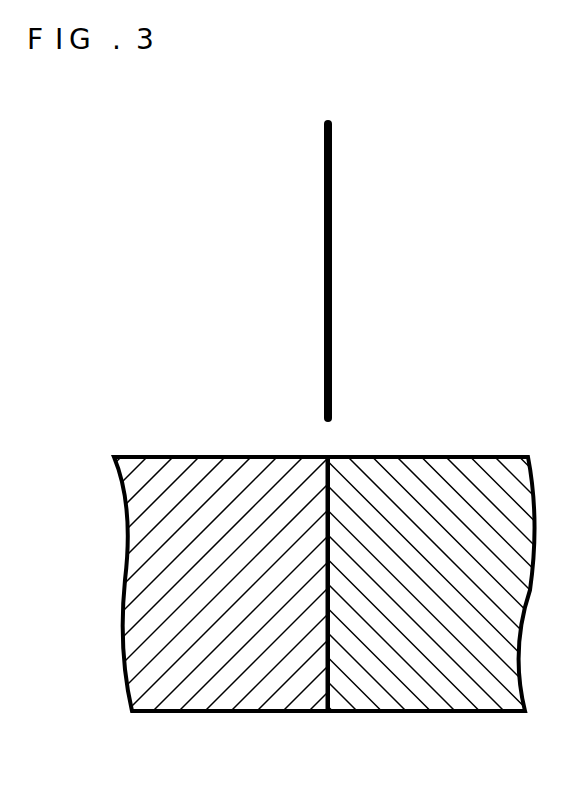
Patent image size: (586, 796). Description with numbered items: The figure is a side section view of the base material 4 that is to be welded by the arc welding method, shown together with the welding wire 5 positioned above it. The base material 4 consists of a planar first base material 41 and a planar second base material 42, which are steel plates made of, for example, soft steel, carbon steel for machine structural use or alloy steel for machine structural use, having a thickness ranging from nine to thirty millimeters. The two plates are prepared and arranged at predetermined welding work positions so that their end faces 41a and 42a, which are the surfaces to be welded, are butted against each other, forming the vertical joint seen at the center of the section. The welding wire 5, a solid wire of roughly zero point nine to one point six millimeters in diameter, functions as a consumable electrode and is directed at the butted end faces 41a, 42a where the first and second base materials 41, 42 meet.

The base material 4 is at (293, 580).
The welding wire 5 is at (332, 157).
The first base material 41 is at (180, 695).
The second base material 42 is at (430, 698).
The end face 41a is at (335, 702).
The end face 42a is at (323, 682).